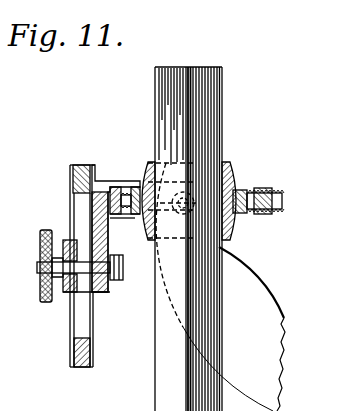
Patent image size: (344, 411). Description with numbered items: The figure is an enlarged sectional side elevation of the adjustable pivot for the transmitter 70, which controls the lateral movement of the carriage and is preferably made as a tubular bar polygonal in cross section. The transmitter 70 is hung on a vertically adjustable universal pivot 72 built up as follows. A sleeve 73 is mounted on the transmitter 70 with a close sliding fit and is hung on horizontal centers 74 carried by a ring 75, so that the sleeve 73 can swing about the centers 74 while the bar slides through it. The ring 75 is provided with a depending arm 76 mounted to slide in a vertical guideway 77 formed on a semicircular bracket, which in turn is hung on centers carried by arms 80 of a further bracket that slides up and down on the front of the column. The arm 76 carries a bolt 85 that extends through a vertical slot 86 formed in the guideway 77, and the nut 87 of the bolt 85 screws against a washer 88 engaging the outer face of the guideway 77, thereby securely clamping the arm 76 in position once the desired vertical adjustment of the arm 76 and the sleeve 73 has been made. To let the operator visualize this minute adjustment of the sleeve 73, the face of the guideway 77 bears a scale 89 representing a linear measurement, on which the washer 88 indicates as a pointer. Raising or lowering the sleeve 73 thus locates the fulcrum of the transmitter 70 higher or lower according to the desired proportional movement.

The transmitter 70 is at (214, 126).
The universal pivot 72 is at (151, 161).
The sleeve 73 is at (235, 176).
The horizontal centers 74 is at (247, 211).
The ring 75 is at (262, 192).
The depending arm 76 is at (108, 246).
The vertical guideway 77 is at (79, 367).
The arms 80 is at (272, 311).
The bolt 85 is at (104, 292).
The vertical slot 86 is at (74, 213).
The nut 87 is at (40, 254).
The washer 88 is at (66, 292).
The scale 89 is at (73, 190).